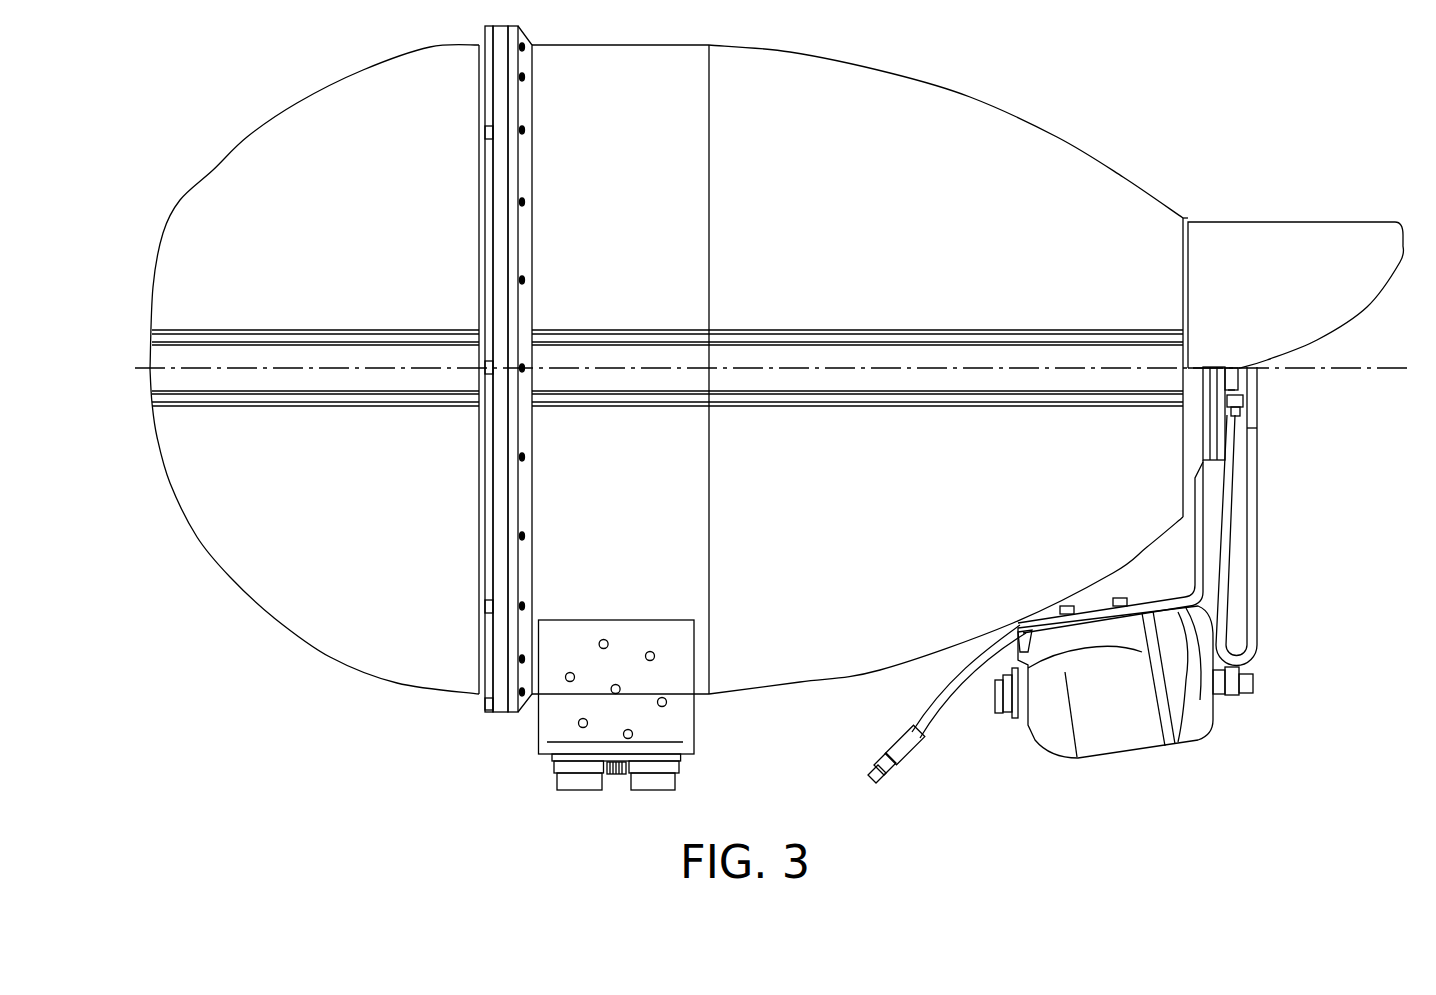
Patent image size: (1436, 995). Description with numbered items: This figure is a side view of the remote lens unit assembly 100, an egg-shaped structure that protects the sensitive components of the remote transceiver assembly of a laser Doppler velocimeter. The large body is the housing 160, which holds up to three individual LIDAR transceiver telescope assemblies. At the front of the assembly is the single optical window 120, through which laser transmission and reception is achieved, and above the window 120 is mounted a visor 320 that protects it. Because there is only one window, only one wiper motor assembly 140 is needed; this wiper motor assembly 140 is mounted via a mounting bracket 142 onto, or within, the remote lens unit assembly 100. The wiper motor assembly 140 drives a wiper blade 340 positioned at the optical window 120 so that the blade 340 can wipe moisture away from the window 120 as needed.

The remote lens unit assembly 100 is at (1130, 29).
The housing 160 is at (962, 113).
The visor 320 is at (1273, 242).
The optical window 120 is at (1233, 378).
The wiper blade 340 is at (1233, 409).
The mounting bracket 142 is at (1201, 553).
The wiper motor assembly 140 is at (1127, 748).